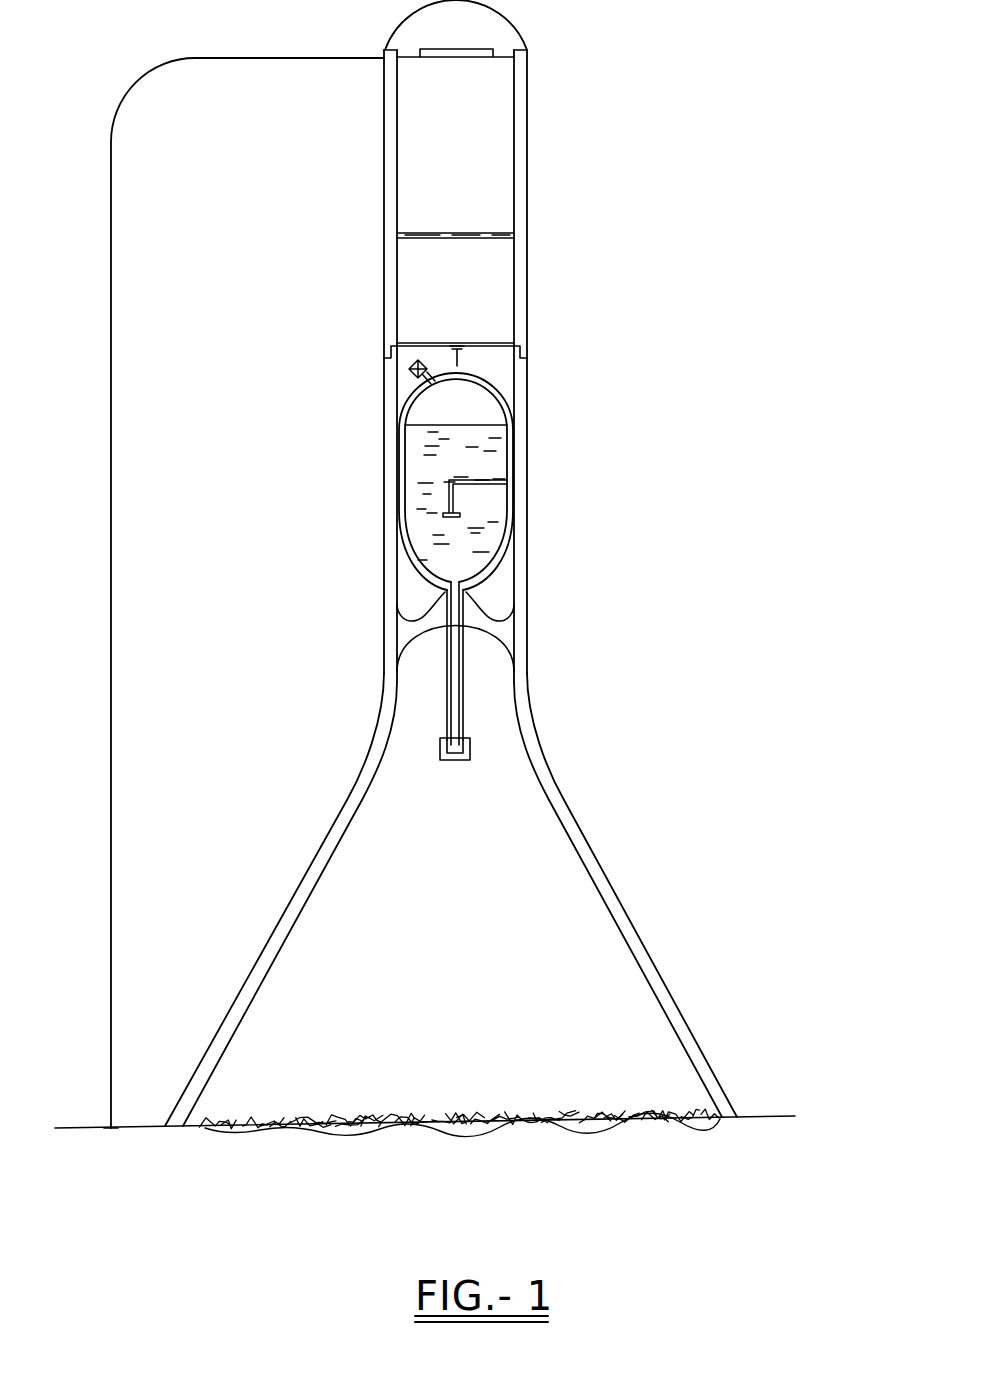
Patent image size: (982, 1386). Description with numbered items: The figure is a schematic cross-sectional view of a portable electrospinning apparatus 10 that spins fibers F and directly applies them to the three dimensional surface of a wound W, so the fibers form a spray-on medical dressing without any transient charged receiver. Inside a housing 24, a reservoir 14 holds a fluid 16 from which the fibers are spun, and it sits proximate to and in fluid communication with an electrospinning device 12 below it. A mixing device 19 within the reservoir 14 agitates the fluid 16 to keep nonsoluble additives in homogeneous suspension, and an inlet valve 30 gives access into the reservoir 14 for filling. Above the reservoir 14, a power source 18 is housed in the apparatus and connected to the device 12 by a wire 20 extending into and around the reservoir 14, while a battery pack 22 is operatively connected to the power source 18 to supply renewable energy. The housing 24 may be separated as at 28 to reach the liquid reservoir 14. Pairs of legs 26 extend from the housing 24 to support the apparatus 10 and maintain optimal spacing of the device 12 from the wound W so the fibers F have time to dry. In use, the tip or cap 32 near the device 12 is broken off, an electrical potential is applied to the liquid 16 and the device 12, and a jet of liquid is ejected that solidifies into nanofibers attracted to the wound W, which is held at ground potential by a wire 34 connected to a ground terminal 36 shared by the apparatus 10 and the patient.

The portable electrospinning apparatus 10 is at (642, 197).
The electrospinning device 12 is at (463, 703).
The reservoir 14 is at (470, 405).
The fluid 16 is at (490, 440).
The power source 18 is at (415, 278).
The mixing device 19 is at (450, 496).
The wire 20 is at (488, 576).
The battery pack 22 is at (420, 167).
The housing 24 is at (527, 272).
The legs 26 is at (652, 965).
The separation location of housing 28 is at (520, 346).
The inlet valve 30 is at (410, 372).
The tip or cap 32 is at (465, 760).
The wire 34 is at (111, 355).
The ground terminal 36 is at (108, 1123).
The fibers F is at (363, 1124).
The wound W is at (495, 1124).